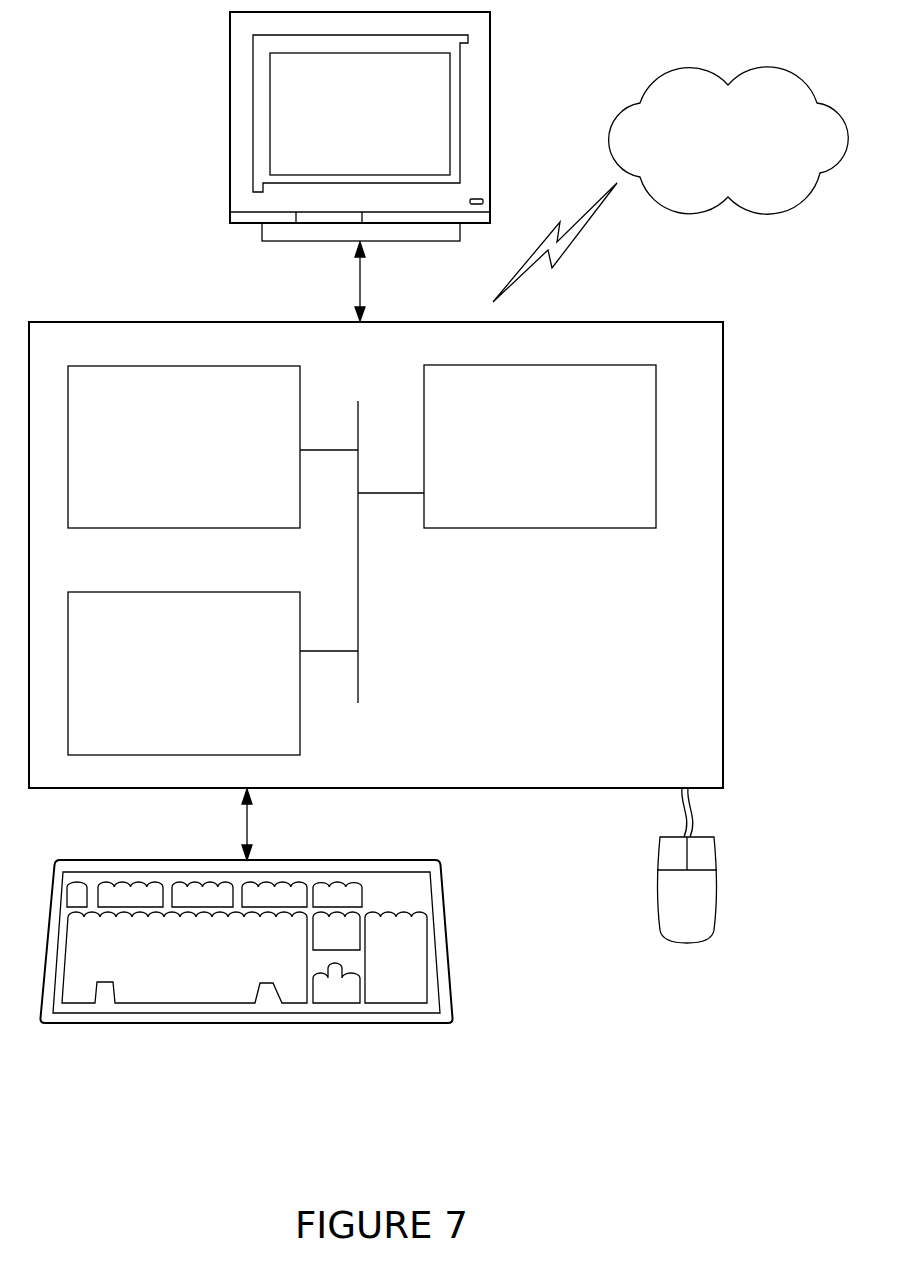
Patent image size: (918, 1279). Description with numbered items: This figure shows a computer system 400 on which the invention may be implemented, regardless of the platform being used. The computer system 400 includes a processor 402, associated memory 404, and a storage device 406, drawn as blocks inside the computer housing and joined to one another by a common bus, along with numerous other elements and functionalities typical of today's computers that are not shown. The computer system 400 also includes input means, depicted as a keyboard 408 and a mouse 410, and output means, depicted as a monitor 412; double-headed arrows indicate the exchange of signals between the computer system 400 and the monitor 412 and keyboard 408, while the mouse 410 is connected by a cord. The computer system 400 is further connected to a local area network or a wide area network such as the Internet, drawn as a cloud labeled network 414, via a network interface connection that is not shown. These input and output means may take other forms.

The computer system 400 is at (745, 315).
The processor 402 is at (535, 459).
The memory 404 is at (163, 459).
The storage device 406 is at (160, 685).
The keyboard 408 is at (156, 980).
The mouse 410 is at (664, 912).
The monitor 412 is at (338, 131).
The network 414 is at (708, 160).